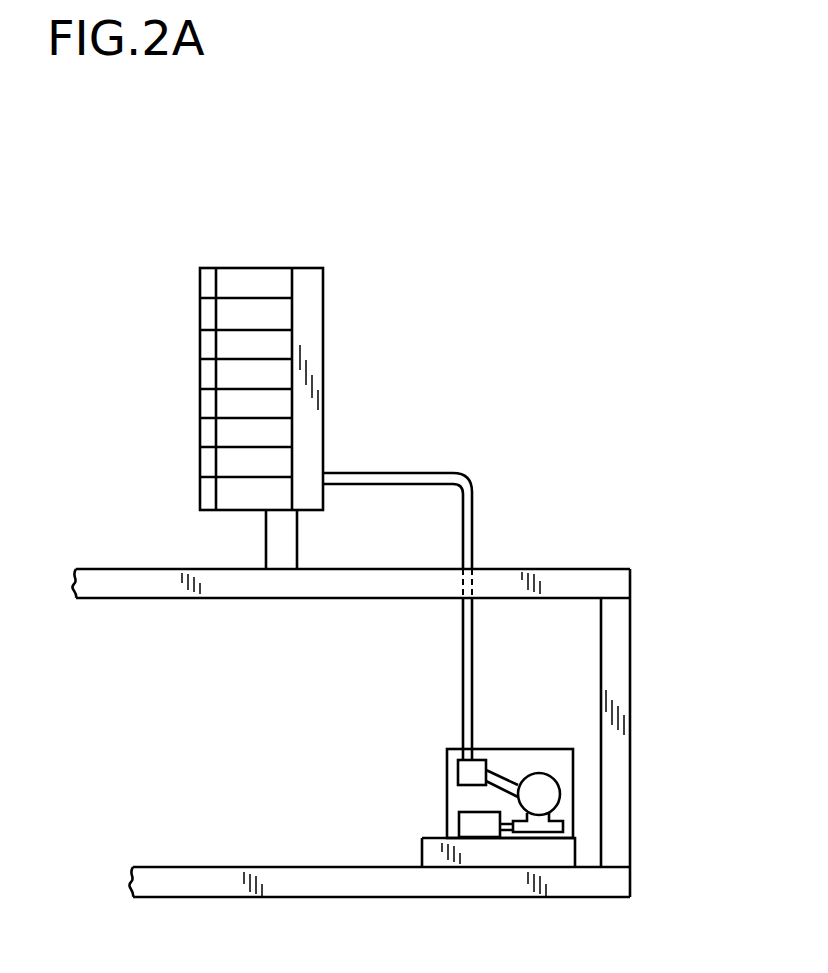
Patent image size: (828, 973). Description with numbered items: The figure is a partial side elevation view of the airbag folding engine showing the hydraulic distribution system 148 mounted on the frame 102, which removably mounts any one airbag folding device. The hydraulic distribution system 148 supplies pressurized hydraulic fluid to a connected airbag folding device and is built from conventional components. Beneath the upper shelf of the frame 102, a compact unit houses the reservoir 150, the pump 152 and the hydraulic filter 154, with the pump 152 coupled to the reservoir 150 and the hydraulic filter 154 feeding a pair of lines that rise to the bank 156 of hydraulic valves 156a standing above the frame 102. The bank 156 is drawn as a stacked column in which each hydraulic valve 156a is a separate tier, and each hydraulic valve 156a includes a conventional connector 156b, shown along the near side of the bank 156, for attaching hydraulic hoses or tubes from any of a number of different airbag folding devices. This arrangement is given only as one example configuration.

The frame 102 is at (190, 602).
The hydraulic distribution system 148 is at (506, 773).
The reservoir 150 is at (478, 823).
The pump 152 is at (557, 795).
The hydraulic filter 154 is at (478, 757).
The bank of hydraulic valves 156 is at (195, 383).
The hydraulic valve 156a is at (260, 275).
The connector 156b is at (196, 283).